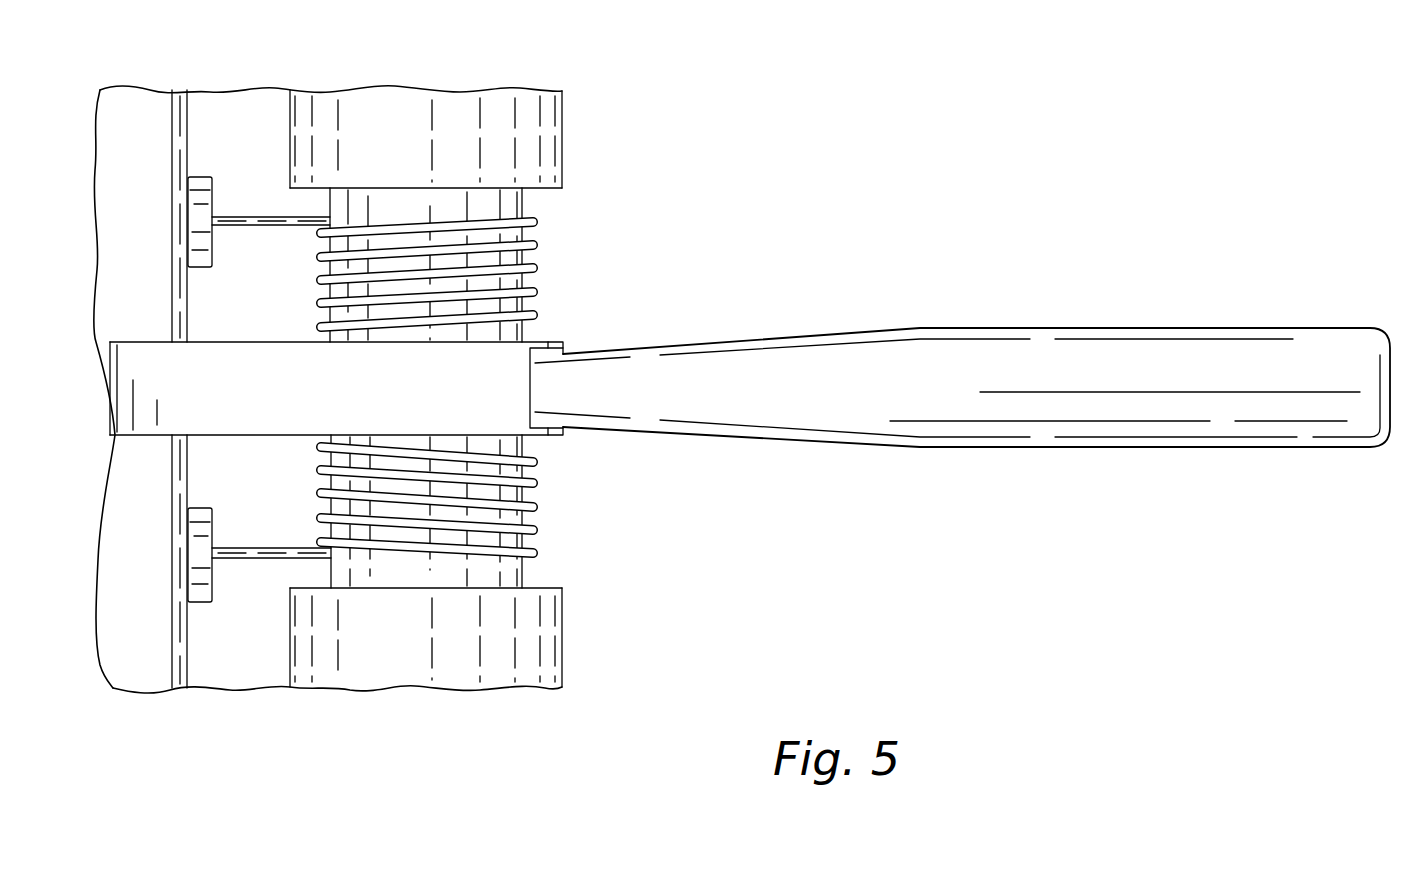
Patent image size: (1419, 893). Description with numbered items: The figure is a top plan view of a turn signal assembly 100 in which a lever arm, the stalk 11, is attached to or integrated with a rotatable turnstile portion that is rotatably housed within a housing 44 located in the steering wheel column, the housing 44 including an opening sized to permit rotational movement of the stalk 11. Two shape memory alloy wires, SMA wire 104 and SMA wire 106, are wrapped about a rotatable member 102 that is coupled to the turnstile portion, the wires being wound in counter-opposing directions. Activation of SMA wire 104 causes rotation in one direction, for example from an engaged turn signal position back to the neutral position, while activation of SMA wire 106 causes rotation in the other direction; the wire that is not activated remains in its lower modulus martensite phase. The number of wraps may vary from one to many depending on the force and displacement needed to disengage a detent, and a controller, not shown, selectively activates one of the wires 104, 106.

The turn signal assembly 100 is at (763, 173).
The stalk 11 is at (1138, 355).
The housing 44 is at (548, 342).
The rotatable member 102 is at (483, 573).
The SMA wire 104 is at (260, 560).
The SMA wire 106 is at (250, 220).